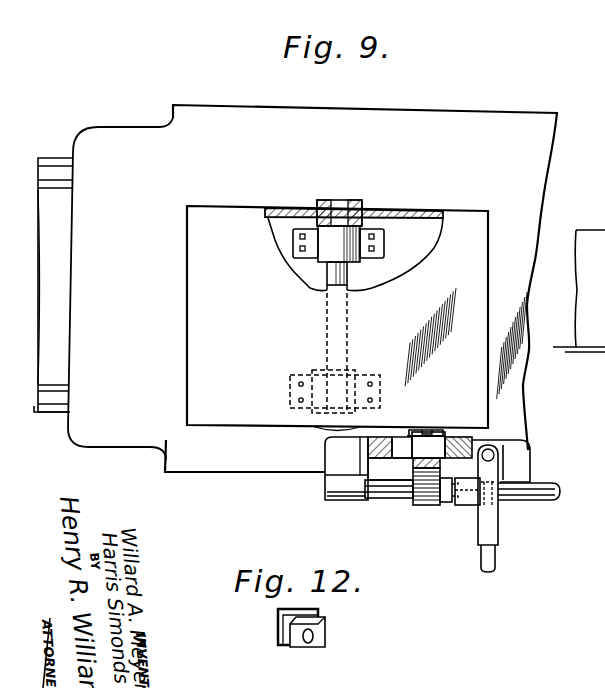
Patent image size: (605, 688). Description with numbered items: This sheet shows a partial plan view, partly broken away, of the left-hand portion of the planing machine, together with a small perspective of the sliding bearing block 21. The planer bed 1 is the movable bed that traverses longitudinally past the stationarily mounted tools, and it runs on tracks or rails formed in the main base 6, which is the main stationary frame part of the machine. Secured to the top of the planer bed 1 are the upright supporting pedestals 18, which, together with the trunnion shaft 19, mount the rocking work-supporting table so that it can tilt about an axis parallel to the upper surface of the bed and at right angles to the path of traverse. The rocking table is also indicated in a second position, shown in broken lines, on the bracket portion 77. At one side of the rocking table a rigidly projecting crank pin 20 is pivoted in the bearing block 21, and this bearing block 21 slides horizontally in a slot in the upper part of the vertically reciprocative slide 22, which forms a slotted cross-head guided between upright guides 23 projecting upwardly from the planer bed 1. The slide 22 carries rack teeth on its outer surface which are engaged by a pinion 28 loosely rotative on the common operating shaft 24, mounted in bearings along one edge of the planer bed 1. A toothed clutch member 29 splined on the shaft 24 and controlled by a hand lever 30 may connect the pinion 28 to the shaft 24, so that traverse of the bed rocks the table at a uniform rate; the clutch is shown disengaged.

In FIG. 9, the planer bed 1 is at (312, 288).
In FIG. 9, the main base 6 is at (53, 285).
In FIG. 9, the upright supporting pedestals 18 is at (384, 240).
In FIG. 9, the trunnion shaft 19 is at (347, 271).
In FIG. 9, the bracket 77 is at (396, 303).
In FIG. 9, the crank pin 20 is at (441, 436).
In FIG. 9, the bearing block 21 is at (426, 430).
In FIG. 12, the bearing block 21 is at (322, 636).
In FIG. 9, the vertically reciprocative slide 22 is at (412, 445).
In FIG. 9, the upright guides 23 is at (363, 445).
In FIG. 9, the common operating shaft 24 is at (545, 506).
In FIG. 9, the pinion 28 is at (415, 512).
In FIG. 9, the toothed clutch member 29 is at (458, 512).
In FIG. 9, the hand lever 30 is at (498, 525).